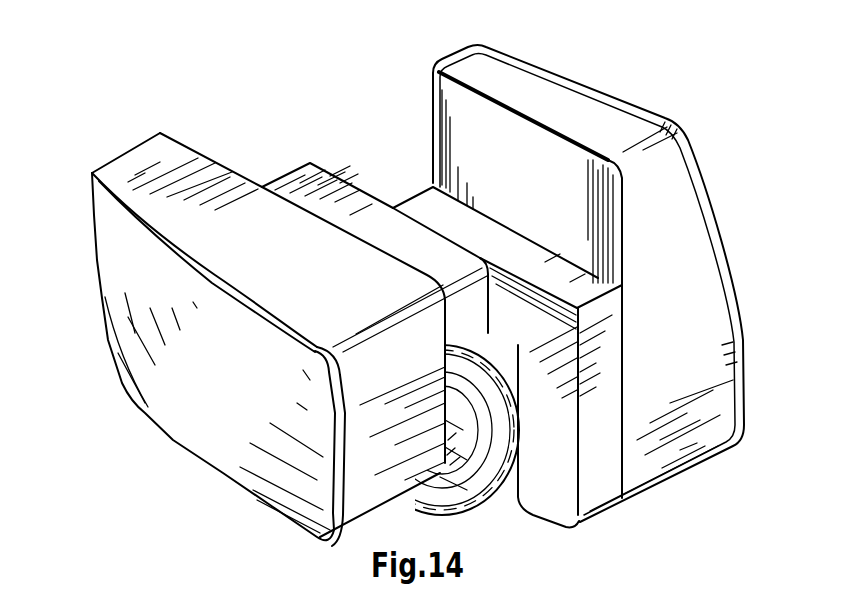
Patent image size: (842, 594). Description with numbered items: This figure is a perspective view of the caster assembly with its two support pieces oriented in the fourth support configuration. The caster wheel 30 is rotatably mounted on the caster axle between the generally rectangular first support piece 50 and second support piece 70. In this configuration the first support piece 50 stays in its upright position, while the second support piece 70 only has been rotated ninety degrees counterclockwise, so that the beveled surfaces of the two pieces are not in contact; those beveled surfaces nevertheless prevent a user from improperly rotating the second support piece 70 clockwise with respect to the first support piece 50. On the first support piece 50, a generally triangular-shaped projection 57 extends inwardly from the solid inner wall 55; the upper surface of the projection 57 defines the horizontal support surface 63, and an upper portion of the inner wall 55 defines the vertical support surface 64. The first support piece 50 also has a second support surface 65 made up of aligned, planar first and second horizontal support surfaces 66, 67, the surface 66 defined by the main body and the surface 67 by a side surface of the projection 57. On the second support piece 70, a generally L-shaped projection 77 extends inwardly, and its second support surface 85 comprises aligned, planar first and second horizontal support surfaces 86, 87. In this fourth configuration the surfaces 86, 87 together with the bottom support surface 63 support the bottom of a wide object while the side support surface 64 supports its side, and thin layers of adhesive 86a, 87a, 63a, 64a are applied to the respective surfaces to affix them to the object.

The caster wheel 30 is at (502, 501).
The first support piece 50 is at (690, 110).
The inner wall 55 is at (532, 163).
The triangular-shaped projection 57 is at (565, 423).
The horizontal support surface 63 is at (577, 288).
The adhesive layer 63a is at (553, 266).
The vertical support surface 64 is at (507, 132).
The adhesive layer 64a is at (575, 173).
The second support surface 65 is at (693, 273).
The first horizontal support surface 66 is at (683, 313).
The second horizontal support surface 67 is at (605, 387).
The second support piece 70 is at (130, 427).
The L-shaped projection 77 is at (332, 170).
The second support surface 85 is at (227, 213).
The first horizontal support surface 86 is at (180, 190).
The adhesive layer 86a is at (150, 170).
The second horizontal support surface 87 is at (293, 187).
The adhesive layer 87a is at (357, 215).